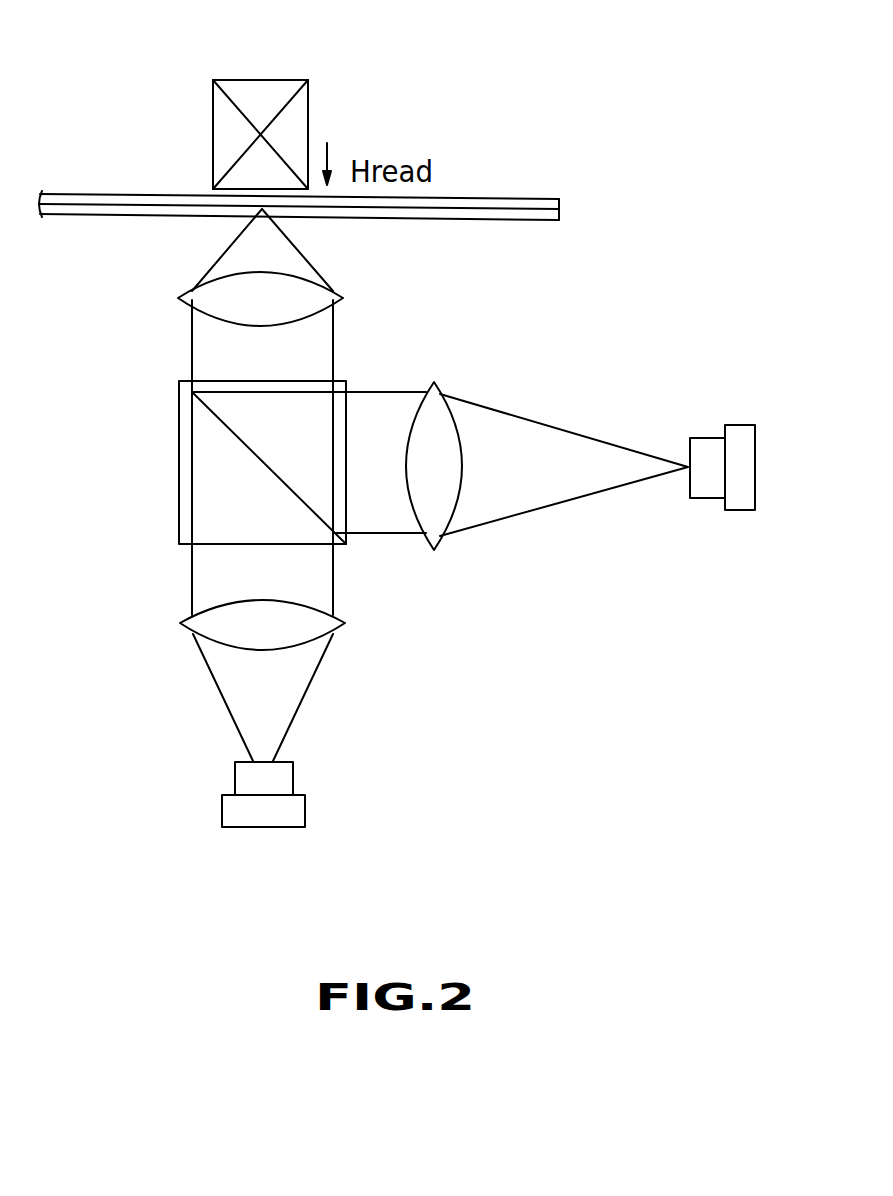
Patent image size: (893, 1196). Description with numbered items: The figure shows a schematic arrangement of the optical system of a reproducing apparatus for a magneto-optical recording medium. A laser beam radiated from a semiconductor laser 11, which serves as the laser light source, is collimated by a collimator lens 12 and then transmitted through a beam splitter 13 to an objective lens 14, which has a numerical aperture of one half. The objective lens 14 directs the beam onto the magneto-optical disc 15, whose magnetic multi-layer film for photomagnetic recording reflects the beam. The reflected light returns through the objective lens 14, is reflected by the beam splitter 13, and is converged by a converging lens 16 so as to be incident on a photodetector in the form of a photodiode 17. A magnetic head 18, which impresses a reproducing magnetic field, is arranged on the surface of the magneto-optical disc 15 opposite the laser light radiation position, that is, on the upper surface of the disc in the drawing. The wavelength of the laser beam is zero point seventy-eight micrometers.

The semiconductor laser 11 is at (235, 778).
The collimator lens 12 is at (180, 625).
The beam splitter 13 is at (179, 461).
The objective lens 14 is at (343, 298).
The magneto-optical disc 15 is at (545, 197).
The converging lens 16 is at (438, 538).
The photodiode 17 is at (712, 490).
The magnetic head 18 is at (263, 88).